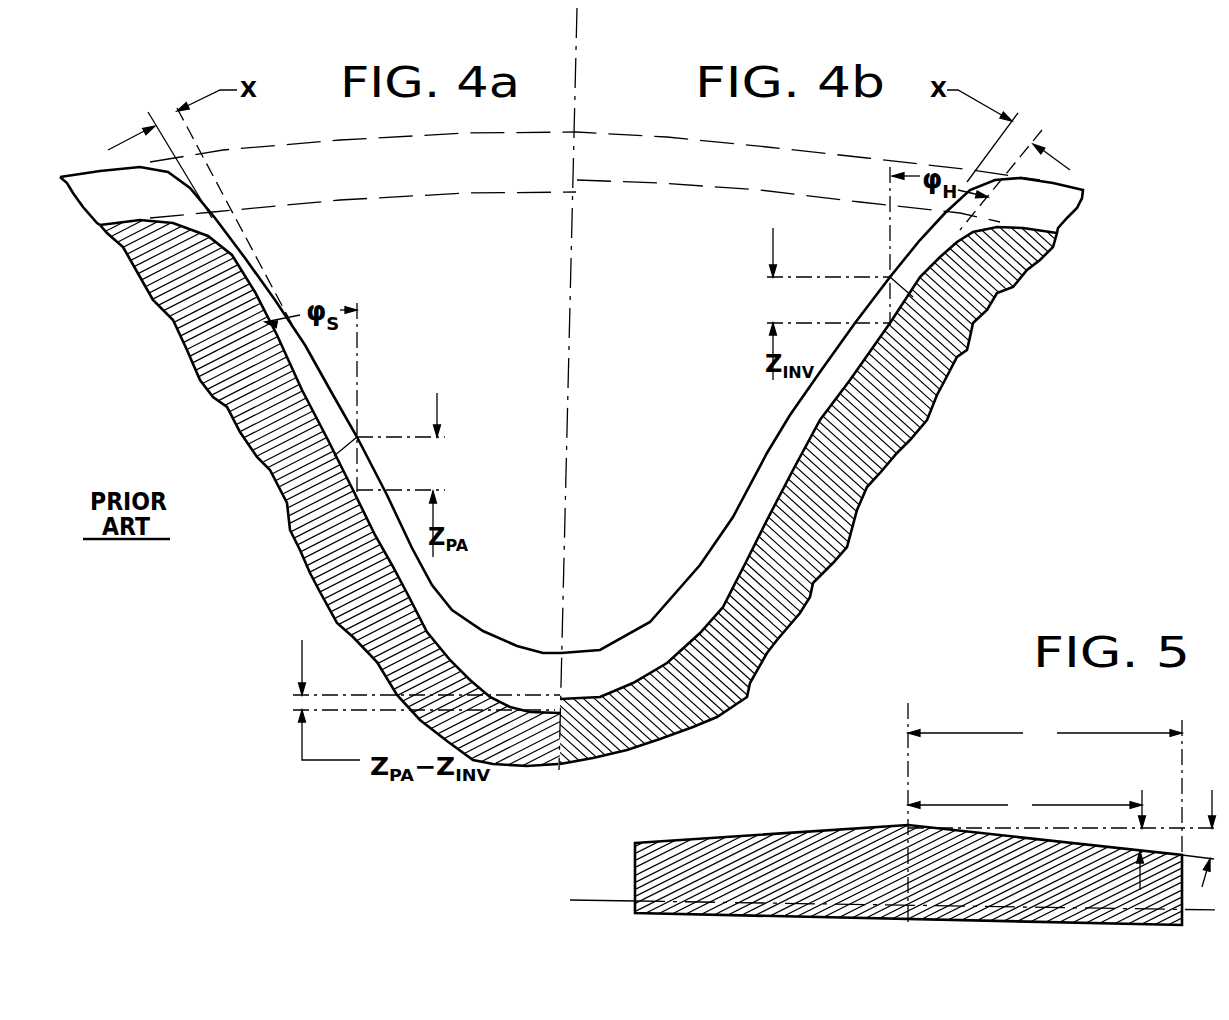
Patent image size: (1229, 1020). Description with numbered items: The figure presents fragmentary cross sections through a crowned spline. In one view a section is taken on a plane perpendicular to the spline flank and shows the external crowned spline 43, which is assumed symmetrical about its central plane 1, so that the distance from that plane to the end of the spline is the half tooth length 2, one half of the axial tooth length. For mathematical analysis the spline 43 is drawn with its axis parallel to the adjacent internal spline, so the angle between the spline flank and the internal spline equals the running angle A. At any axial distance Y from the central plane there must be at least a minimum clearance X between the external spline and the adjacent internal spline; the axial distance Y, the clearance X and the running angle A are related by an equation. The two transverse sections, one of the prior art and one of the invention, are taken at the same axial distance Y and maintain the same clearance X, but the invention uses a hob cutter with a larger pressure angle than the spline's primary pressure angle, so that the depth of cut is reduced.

The external crowned spline 43 is at (645, 867).
The central plane CP1 1 is at (908, 725).
The half tooth length T/ 2 is at (1049, 735).
The spline clearance X is at (1142, 790).
The axial distance Y is at (1025, 805).
The running angle A is at (1207, 827).